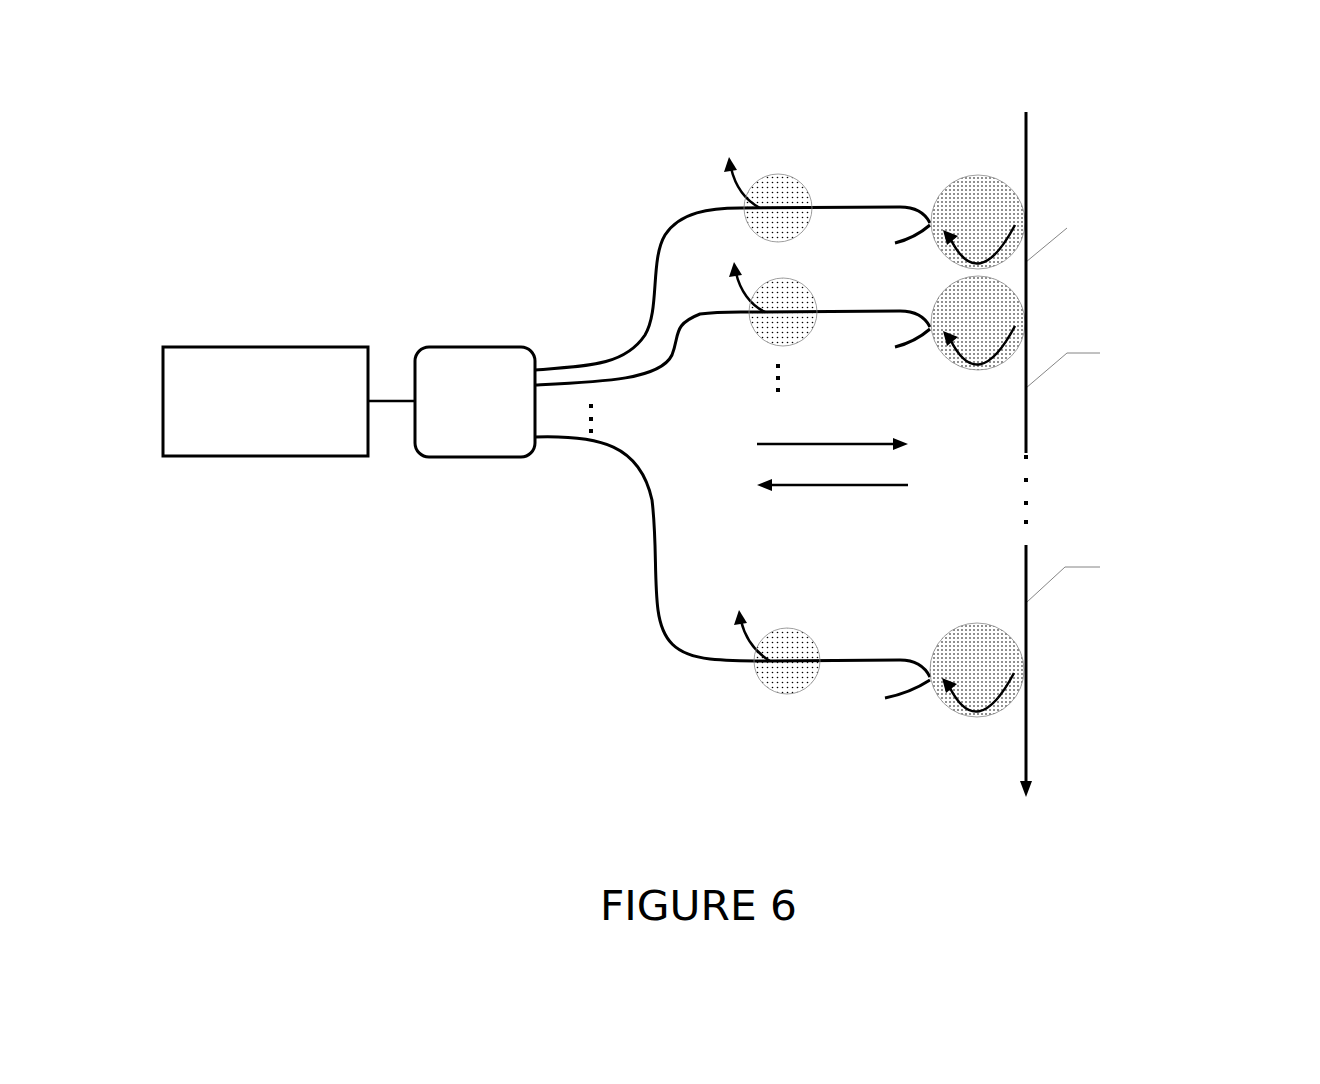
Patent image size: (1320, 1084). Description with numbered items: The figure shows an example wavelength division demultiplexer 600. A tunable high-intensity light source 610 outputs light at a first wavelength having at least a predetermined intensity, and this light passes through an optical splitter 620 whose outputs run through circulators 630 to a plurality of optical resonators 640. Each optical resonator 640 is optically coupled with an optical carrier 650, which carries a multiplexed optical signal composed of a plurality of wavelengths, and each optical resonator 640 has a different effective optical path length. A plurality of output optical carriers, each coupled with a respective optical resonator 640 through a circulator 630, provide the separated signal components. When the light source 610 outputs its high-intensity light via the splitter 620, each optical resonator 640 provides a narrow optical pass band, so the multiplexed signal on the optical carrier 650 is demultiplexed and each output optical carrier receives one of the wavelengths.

The wavelength division demultiplexer 600 is at (425, 678).
The tunable high-intensity light source 610 is at (267, 347).
The optical splitter 620 is at (472, 347).
The circulator 630 is at (788, 740).
The optical resonator 640 is at (975, 752).
The optical carrier 650 is at (1026, 132).